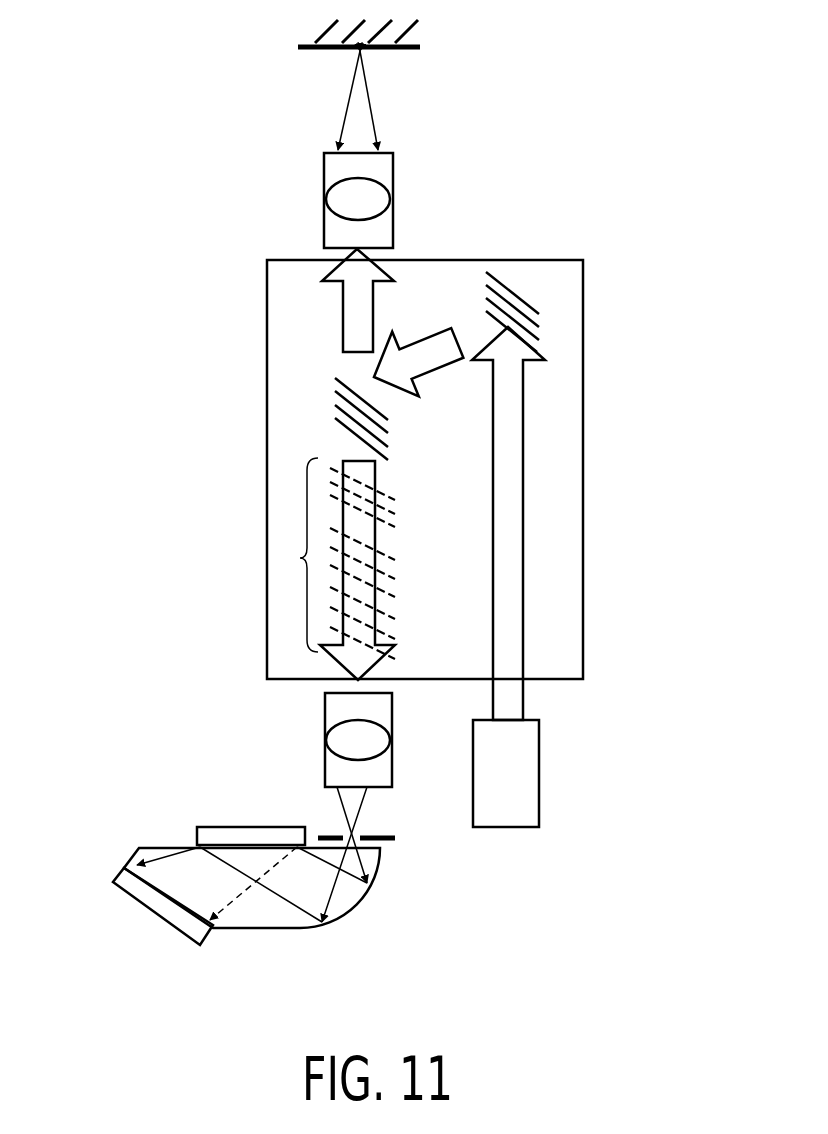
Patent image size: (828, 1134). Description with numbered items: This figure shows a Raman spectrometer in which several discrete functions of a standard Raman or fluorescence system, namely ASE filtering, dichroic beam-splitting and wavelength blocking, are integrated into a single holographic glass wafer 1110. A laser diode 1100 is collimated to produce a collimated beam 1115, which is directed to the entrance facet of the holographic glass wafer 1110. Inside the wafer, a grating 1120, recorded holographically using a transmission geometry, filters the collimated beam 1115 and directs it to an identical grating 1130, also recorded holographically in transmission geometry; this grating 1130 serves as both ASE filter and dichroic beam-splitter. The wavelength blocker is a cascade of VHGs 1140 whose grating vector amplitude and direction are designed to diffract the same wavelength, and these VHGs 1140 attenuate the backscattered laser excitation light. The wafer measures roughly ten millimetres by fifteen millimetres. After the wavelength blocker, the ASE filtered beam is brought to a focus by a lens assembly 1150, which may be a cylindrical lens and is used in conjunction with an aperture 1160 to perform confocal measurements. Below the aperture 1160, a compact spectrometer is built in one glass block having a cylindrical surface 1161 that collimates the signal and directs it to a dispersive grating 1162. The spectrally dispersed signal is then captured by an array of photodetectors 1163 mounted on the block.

The laser diode 1100 is at (541, 773).
The holographic glass wafer 1110 is at (583, 613).
The collimated beam 1115 is at (525, 505).
The grating 1120 is at (513, 290).
The grating 1130 is at (322, 404).
The cascade of VHGs 1140 is at (300, 558).
The lens assembly 1150 is at (325, 766).
The aperture 1160 is at (397, 840).
The cylindrical surface 1161 is at (350, 908).
The dispersive grating 1162 is at (197, 838).
The array of photodetectors 1163 is at (158, 917).